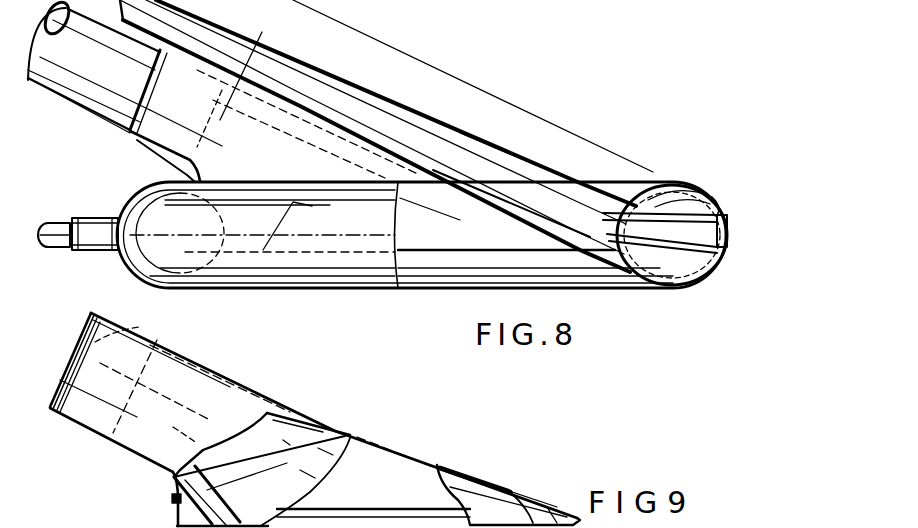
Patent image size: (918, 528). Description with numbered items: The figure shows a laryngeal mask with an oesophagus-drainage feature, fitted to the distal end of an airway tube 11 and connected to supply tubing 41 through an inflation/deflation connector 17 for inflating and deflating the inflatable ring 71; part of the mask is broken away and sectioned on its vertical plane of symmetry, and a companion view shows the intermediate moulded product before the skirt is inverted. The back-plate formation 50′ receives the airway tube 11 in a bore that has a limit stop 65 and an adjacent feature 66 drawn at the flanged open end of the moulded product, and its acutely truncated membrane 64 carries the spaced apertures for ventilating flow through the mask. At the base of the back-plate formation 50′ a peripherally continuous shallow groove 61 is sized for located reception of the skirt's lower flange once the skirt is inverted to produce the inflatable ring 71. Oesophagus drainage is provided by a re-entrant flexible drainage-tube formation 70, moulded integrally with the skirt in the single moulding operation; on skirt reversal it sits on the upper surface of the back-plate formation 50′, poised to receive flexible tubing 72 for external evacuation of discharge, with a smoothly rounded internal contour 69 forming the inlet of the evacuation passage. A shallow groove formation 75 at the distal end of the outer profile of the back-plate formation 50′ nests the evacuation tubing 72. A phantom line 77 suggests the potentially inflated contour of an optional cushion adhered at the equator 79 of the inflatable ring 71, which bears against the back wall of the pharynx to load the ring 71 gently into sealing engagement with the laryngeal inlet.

In FIG. 8, the airway tube 11 is at (77, 107).
In FIG. 8, the inflation/deflation connector 17 is at (97, 232).
In FIG. 8, the supply tubing 41 is at (53, 232).
In FIG. 8, the back-plate formation 50′ is at (266, 118).
In FIG. 9, the back-plate formation 50′ is at (280, 398).
In FIG. 9, the shallow groove 61 is at (172, 499).
In FIG. 9, the membrane 64 is at (267, 462).
In FIG. 9, the limit stop 65 is at (83, 350).
In FIG. 9, the flange outer rim 66 is at (75, 332).
In FIG. 8, the smoothly rounded internal contour 69 is at (729, 235).
In FIG. 8, the drainage-tube formation 70 is at (681, 207).
In FIG. 8, the inflatable ring 71 is at (612, 278).
In FIG. 8, the flexible tubing 72 is at (524, 173).
In FIG. 9, the shallow groove formation 75 is at (548, 502).
In FIG. 8, the phantom line 77 is at (606, 141).
In FIG. 8, the equator 79 is at (168, 232).